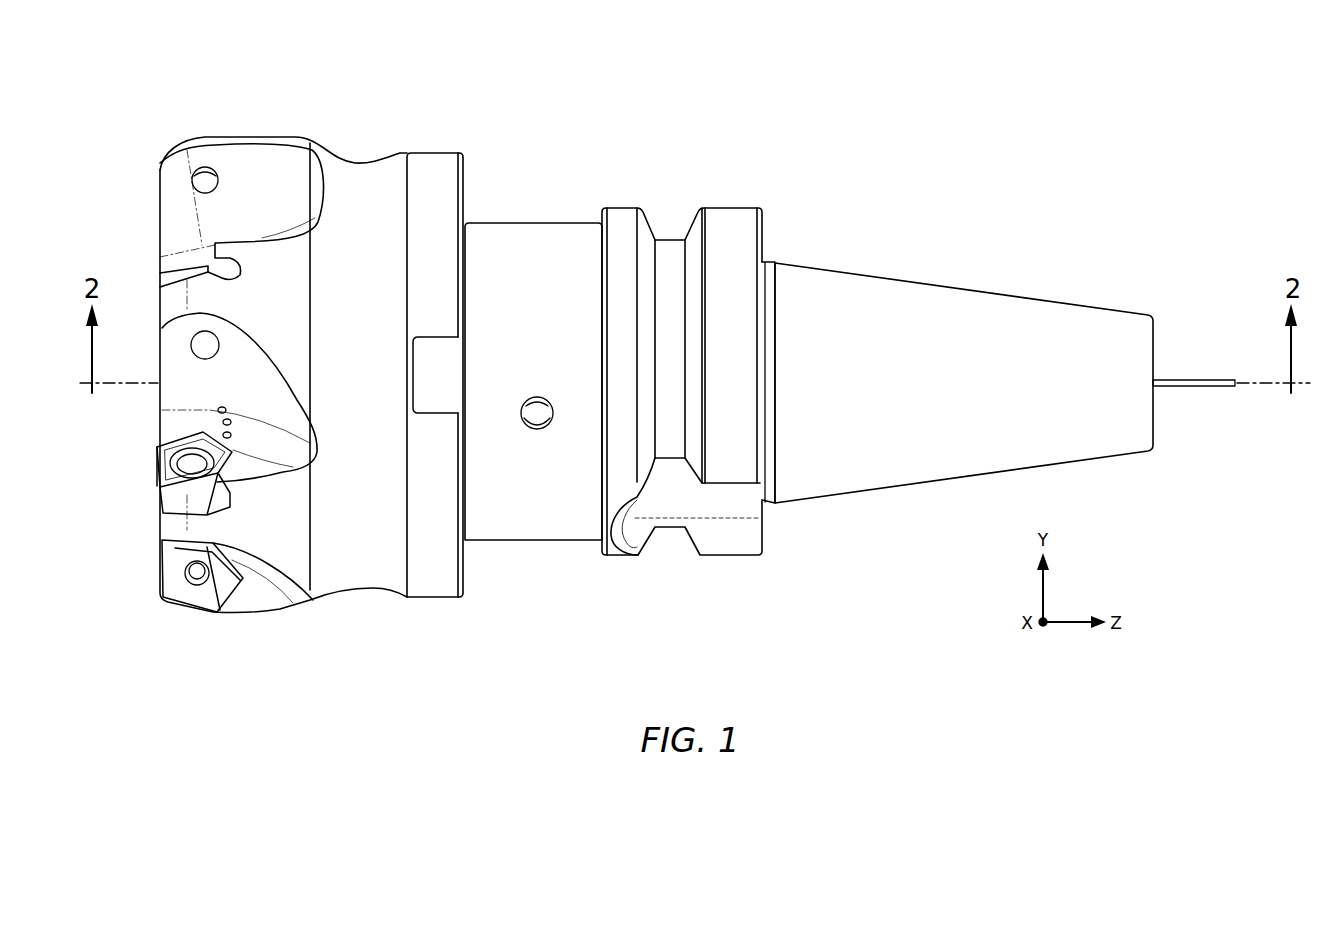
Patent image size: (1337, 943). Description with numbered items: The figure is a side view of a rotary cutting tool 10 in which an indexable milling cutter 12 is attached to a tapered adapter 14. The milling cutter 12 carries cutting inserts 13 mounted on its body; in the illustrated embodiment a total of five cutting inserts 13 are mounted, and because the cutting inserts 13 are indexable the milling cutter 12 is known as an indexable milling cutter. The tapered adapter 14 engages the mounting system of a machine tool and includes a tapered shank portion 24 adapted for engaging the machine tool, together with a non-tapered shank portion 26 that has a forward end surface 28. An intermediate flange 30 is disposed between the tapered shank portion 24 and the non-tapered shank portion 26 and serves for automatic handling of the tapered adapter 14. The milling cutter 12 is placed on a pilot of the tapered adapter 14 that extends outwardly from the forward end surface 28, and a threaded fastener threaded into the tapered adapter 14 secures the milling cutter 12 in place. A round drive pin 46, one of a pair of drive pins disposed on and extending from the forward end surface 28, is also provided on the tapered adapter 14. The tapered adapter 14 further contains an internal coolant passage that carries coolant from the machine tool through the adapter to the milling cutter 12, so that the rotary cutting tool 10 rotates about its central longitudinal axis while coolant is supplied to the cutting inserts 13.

The rotary cutting tool 10 is at (686, 81).
The milling cutter 12 is at (433, 61).
The cutting insert 13 is at (139, 470).
The tapered adapter 14 is at (989, 186).
The tapered shank portion 24 is at (909, 274).
The non-tapered shank portion 26 is at (548, 219).
The forward end surface 28 is at (458, 258).
The intermediate flange 30 is at (721, 196).
The round drive pin 46 is at (438, 393).